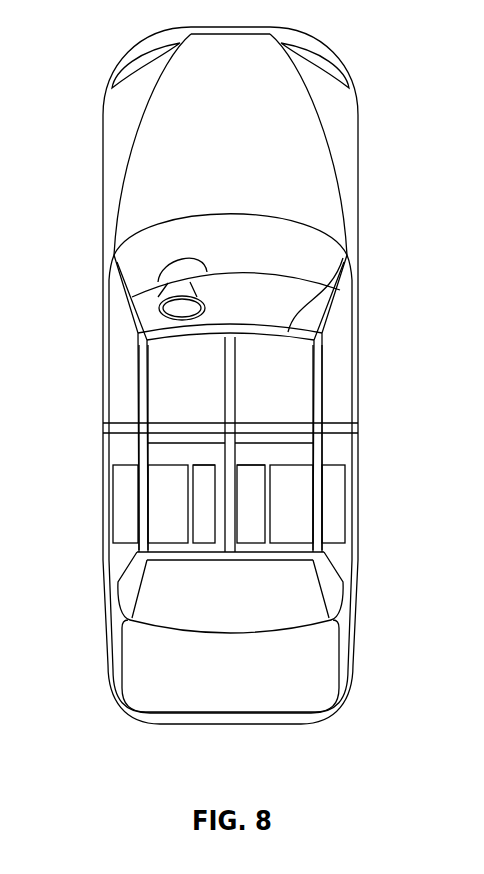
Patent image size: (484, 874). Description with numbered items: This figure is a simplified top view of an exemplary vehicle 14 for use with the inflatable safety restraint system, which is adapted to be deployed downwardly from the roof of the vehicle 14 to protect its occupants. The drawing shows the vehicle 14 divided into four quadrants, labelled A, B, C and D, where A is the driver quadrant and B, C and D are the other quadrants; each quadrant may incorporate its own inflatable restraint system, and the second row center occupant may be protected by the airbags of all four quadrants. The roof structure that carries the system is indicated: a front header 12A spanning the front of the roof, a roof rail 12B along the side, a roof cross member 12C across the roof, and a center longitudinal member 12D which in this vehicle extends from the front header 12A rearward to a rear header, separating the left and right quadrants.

The vehicle 14 is at (377, 202).
The front header 12A is at (143, 421).
The roof rail 12B is at (288, 332).
The roof cross member 12C is at (212, 440).
The center longitudinal member 12D is at (228, 458).